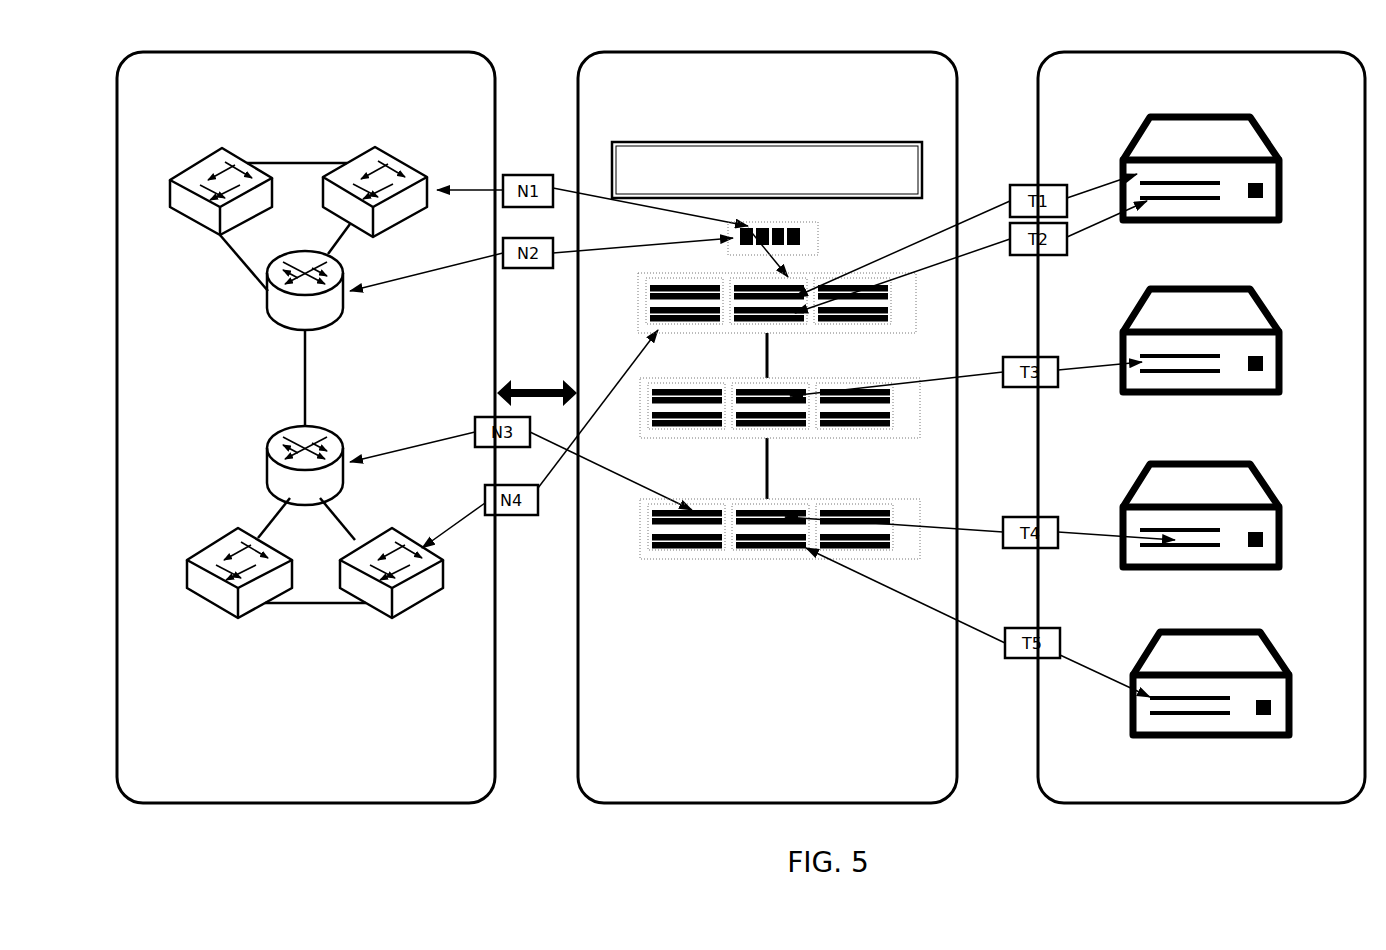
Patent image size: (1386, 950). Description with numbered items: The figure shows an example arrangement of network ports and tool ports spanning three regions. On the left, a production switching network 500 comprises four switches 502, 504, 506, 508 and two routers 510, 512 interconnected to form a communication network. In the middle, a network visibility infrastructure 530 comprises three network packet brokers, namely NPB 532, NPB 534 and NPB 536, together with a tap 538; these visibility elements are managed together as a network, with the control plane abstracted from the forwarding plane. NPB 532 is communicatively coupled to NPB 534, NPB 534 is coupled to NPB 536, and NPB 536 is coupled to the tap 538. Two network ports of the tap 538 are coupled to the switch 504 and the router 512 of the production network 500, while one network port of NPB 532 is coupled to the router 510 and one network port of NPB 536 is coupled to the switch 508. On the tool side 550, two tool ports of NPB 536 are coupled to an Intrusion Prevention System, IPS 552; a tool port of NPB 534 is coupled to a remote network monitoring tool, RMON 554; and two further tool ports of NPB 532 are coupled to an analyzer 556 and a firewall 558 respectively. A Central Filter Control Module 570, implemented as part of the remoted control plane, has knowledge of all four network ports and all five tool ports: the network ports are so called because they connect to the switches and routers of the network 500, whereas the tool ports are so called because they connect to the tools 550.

The production network 500 is at (463, 50).
The switch 502 is at (188, 163).
The switch 504 is at (412, 217).
The switch 506 is at (185, 583).
The switch 508 is at (403, 612).
The router 510 is at (268, 480).
The router 512 is at (270, 308).
The network visibility infrastructure 530 is at (905, 57).
The NPB 532 is at (797, 553).
The NPB 534 is at (885, 440).
The NPB 536 is at (648, 304).
The tap 538 is at (818, 235).
The tool side 550 is at (1313, 52).
The IPS 552 is at (1273, 140).
The remote network monitoring (RMON) 554 is at (1273, 312).
The analyzer 556 is at (1273, 483).
The firewall 558 is at (1280, 648).
The Central Filter Control Module 570 is at (767, 170).